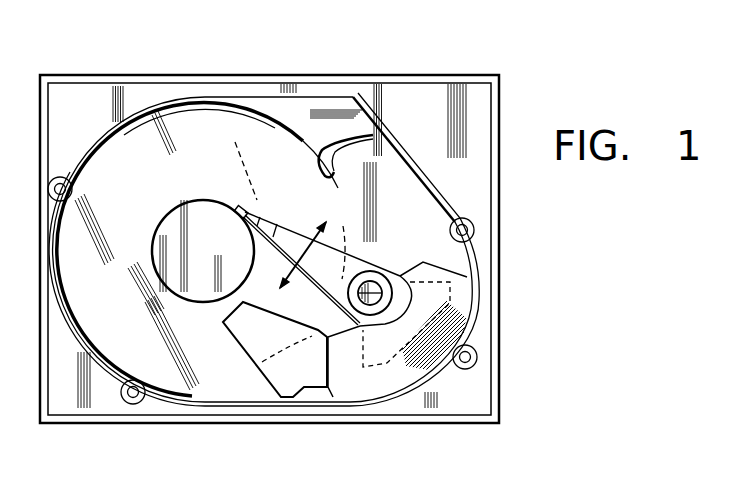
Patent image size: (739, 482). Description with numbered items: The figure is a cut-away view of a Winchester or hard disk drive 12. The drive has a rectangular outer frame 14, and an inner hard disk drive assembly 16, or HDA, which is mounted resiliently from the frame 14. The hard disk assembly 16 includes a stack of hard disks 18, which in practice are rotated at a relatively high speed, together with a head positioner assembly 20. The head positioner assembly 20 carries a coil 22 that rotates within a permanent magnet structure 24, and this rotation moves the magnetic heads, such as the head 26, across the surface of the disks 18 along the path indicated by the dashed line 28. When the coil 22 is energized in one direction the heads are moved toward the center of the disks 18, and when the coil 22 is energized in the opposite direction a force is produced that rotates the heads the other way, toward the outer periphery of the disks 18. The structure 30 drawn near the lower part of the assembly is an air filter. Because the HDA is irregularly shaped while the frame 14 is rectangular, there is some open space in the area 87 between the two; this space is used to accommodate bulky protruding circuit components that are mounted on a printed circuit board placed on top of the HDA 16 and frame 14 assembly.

The hard disk drive 12 is at (296, 55).
The outer frame 14 is at (437, 78).
The hard disk drive assembly 16 is at (168, 98).
The hard disks 18 is at (201, 249).
The head positioner assembly 20 is at (400, 272).
The coil 22 is at (458, 327).
The permanent magnet structure 24 is at (358, 384).
The magnetic head 26 is at (240, 206).
The dashed line 28 is at (252, 135).
The air filter 30 is at (277, 348).
The space 87 is at (413, 129).